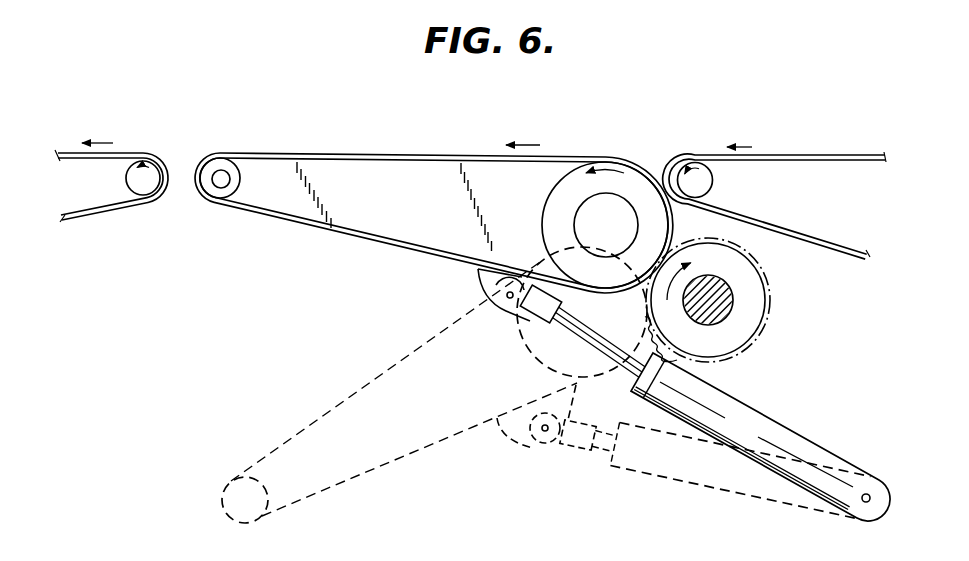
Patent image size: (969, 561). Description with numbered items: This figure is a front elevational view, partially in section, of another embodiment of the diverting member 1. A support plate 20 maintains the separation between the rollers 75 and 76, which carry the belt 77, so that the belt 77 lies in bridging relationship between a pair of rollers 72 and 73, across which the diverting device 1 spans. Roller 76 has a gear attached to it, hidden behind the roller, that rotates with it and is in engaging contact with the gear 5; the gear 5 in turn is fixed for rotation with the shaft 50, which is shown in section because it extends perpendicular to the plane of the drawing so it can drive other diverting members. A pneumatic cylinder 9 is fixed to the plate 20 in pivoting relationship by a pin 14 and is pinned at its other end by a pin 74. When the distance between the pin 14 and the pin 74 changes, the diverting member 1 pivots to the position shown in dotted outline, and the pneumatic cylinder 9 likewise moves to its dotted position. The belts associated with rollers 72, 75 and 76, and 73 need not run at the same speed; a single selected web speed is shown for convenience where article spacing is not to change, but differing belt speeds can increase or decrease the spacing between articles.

The diverting member 1 is at (443, 128).
The gear 5 is at (770, 314).
The pneumatic cylinder 9 is at (773, 421).
The pin 14 is at (508, 312).
The support plate 20 is at (396, 203).
The shaft 50 is at (727, 282).
The roller 72 is at (123, 177).
The roller 73 is at (713, 184).
The pin 74 is at (866, 494).
The roller 75 is at (240, 179).
The roller 76 is at (544, 206).
The belt 77 is at (322, 153).